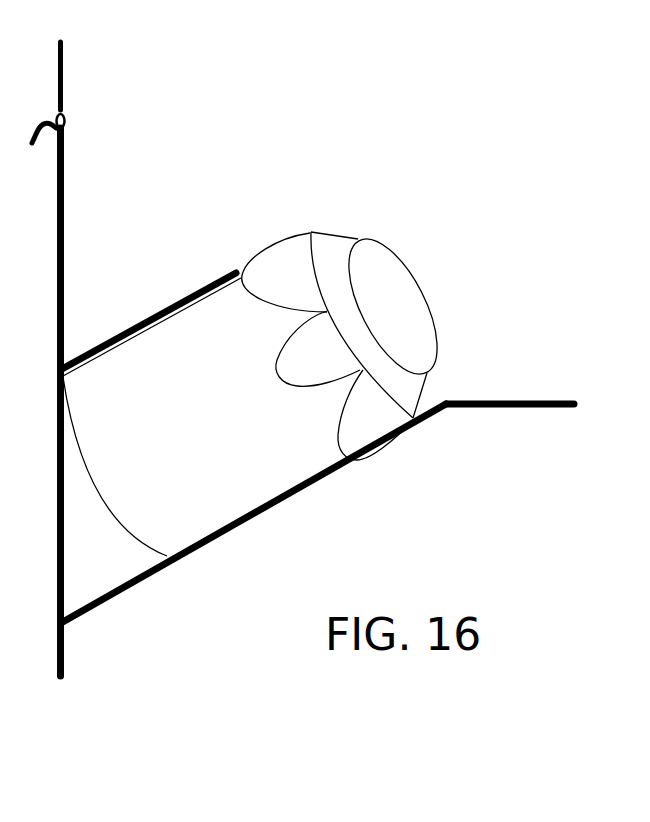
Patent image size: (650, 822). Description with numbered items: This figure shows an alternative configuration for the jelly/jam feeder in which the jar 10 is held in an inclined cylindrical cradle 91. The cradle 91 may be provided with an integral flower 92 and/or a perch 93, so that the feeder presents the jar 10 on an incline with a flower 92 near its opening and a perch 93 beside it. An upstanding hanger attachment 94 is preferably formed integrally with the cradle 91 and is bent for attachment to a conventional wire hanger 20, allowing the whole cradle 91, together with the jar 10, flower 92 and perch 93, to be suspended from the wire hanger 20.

The jar 10 is at (210, 454).
The wire hanger 20 is at (63, 60).
The cylindrical cradle 91 is at (263, 509).
The flower 92 is at (384, 436).
The perch 93 is at (545, 402).
The hanger attachment 94 is at (63, 200).